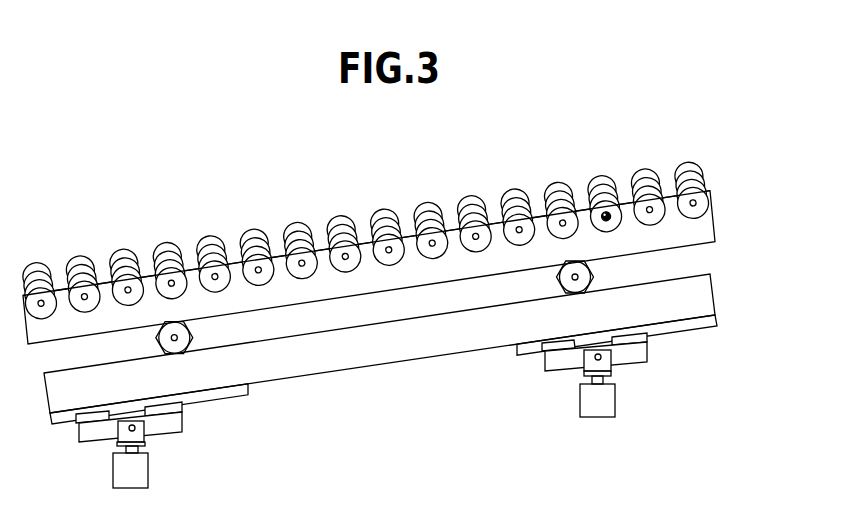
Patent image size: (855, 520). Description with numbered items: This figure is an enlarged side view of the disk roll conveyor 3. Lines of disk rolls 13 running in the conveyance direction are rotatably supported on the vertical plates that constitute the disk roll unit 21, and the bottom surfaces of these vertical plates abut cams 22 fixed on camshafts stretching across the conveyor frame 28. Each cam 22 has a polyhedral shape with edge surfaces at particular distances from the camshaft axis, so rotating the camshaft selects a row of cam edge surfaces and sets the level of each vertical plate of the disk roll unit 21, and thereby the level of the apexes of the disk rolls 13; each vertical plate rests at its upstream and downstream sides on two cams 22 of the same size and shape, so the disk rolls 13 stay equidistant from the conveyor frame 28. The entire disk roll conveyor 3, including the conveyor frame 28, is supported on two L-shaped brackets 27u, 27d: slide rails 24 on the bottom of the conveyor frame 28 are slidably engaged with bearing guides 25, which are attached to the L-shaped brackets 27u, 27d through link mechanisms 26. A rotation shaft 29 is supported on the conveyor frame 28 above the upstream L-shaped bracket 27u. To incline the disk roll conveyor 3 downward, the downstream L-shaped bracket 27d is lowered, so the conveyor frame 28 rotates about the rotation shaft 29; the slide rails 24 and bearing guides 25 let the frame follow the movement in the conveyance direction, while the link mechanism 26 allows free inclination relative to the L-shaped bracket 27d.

The disk roll conveyor 3 is at (386, 308).
The disk rolls 13 is at (127, 248).
The rotation shaft 29 is at (598, 216).
The disk roll unit 21 is at (710, 228).
The conveyor frame 28 is at (710, 303).
The slide rails 24 is at (250, 389).
The bearing guides 25 is at (77, 422).
The cams 22 is at (183, 344).
The link mechanisms 26 is at (144, 437).
The L-shaped bracket of the downstream side 27d is at (145, 473).
The L-shaped bracket of the upstream side 27u is at (597, 408).